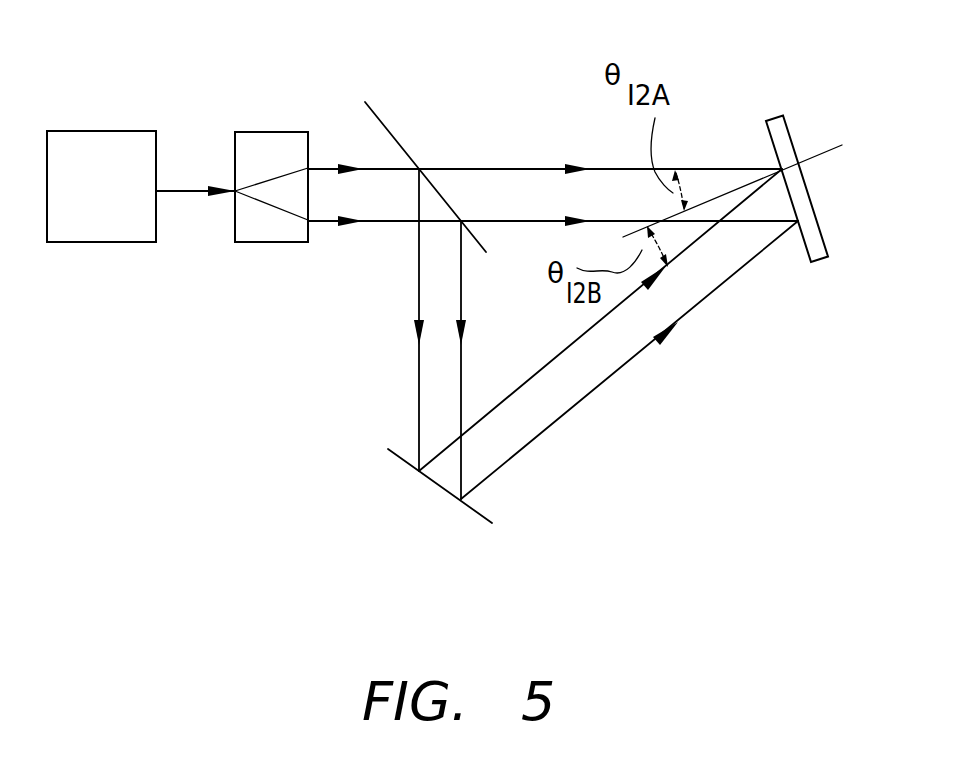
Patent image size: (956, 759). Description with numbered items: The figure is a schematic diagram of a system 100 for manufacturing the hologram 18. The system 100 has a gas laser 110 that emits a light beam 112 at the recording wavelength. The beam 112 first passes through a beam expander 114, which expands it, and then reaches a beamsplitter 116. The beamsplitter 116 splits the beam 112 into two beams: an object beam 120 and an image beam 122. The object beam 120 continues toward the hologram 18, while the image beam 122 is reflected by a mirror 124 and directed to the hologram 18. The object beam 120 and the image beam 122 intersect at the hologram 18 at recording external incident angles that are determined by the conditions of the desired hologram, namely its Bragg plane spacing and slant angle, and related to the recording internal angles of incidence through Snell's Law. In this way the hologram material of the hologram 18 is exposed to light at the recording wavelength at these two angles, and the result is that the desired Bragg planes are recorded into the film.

The system 100 is at (215, 420).
The gas laser 110 is at (108, 131).
The light beam 112 is at (192, 188).
The beam expander 114 is at (283, 132).
The beamsplitter 116 is at (388, 128).
The object beam 120 is at (502, 168).
The image beam 122 is at (417, 389).
The mirror 124 is at (410, 465).
The hologram 18 is at (788, 122).